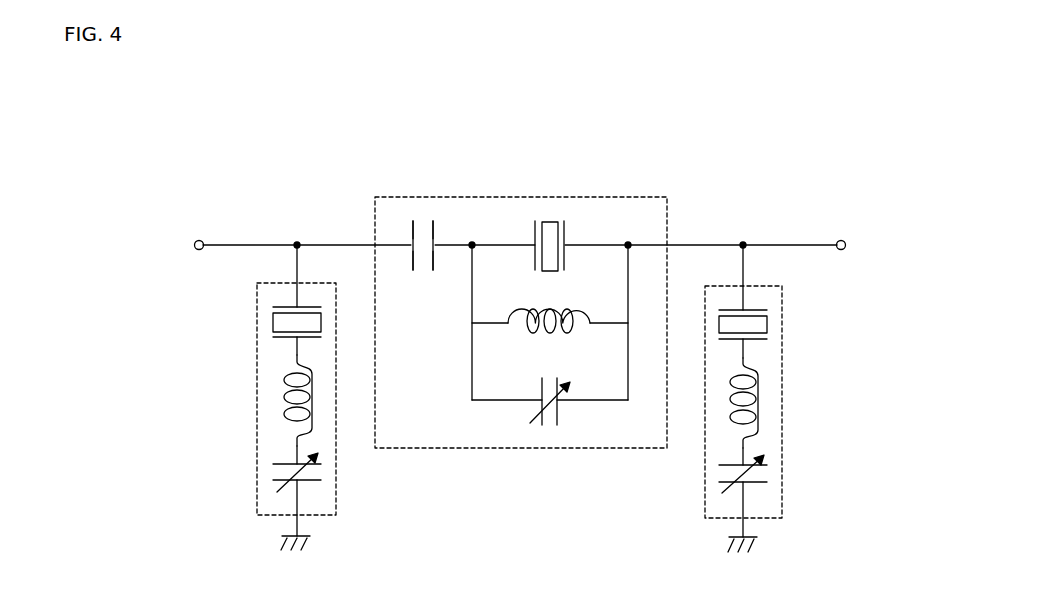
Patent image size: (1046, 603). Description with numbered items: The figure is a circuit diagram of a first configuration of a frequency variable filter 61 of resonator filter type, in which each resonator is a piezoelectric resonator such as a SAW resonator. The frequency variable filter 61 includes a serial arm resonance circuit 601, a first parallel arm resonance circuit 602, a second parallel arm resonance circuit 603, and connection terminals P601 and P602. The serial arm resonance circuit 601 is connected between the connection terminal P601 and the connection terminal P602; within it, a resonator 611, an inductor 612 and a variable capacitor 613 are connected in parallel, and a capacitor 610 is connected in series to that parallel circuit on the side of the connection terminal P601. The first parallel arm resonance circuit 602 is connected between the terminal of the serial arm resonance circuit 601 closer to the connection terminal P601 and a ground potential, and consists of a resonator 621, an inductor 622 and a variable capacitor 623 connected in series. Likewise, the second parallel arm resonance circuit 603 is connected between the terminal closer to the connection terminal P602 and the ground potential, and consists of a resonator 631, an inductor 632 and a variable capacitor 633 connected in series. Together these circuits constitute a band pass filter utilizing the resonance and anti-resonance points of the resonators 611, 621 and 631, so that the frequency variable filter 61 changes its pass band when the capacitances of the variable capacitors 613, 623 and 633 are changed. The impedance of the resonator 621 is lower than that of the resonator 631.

The frequency variable filter 61 is at (700, 168).
The connection terminal P601 is at (197, 241).
The connection terminal P602 is at (850, 231).
The serial arm resonance circuit 601 is at (628, 188).
The capacitor 610 is at (441, 217).
The resonator 611 is at (573, 217).
The inductor 612 is at (589, 300).
The variable capacitor 613 is at (541, 383).
The first parallel arm resonance circuit 602 is at (257, 305).
The resonator 621 is at (282, 338).
The inductor 622 is at (285, 402).
The variable capacitor 623 is at (280, 463).
The second parallel arm resonance circuit 603 is at (783, 309).
The resonator 631 is at (768, 340).
The inductor 632 is at (758, 411).
The variable capacitor 633 is at (768, 484).